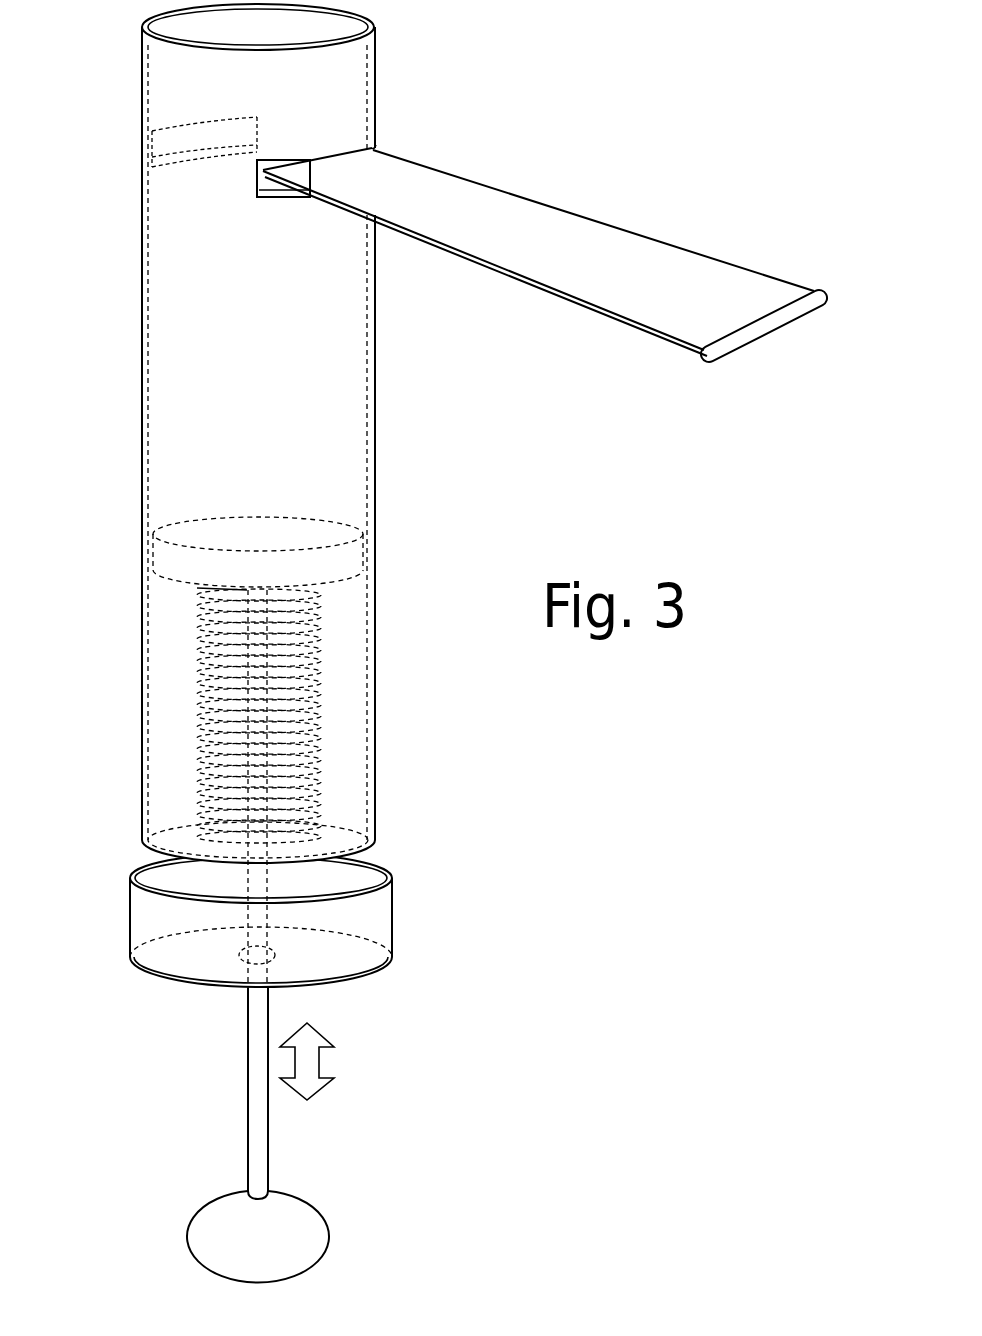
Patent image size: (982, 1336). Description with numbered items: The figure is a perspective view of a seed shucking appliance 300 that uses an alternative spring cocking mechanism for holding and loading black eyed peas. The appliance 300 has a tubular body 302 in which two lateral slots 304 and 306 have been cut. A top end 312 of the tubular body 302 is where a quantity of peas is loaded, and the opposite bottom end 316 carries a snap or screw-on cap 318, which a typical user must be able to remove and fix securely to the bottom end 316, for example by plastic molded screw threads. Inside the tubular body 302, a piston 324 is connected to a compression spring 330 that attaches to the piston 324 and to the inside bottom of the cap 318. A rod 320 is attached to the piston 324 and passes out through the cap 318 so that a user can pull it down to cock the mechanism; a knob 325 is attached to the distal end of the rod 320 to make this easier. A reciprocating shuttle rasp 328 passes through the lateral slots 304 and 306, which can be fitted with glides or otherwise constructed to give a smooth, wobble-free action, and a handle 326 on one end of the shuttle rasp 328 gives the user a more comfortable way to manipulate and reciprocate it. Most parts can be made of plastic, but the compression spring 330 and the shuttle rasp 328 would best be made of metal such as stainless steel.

The seed shucking appliance 300 is at (531, 84).
The tubular body 302 is at (142, 208).
The lateral slot 304 is at (234, 116).
The lateral slot 306 is at (257, 182).
The top end 312 is at (142, 23).
The bottom end 316 is at (137, 840).
The cap 318 is at (130, 935).
The rod 320 is at (250, 1037).
The piston 324 is at (209, 577).
The knob 325 is at (192, 1228).
The handle 326 is at (702, 357).
The reciprocating shuttle rasp 328 is at (498, 255).
The compression spring 330 is at (210, 678).